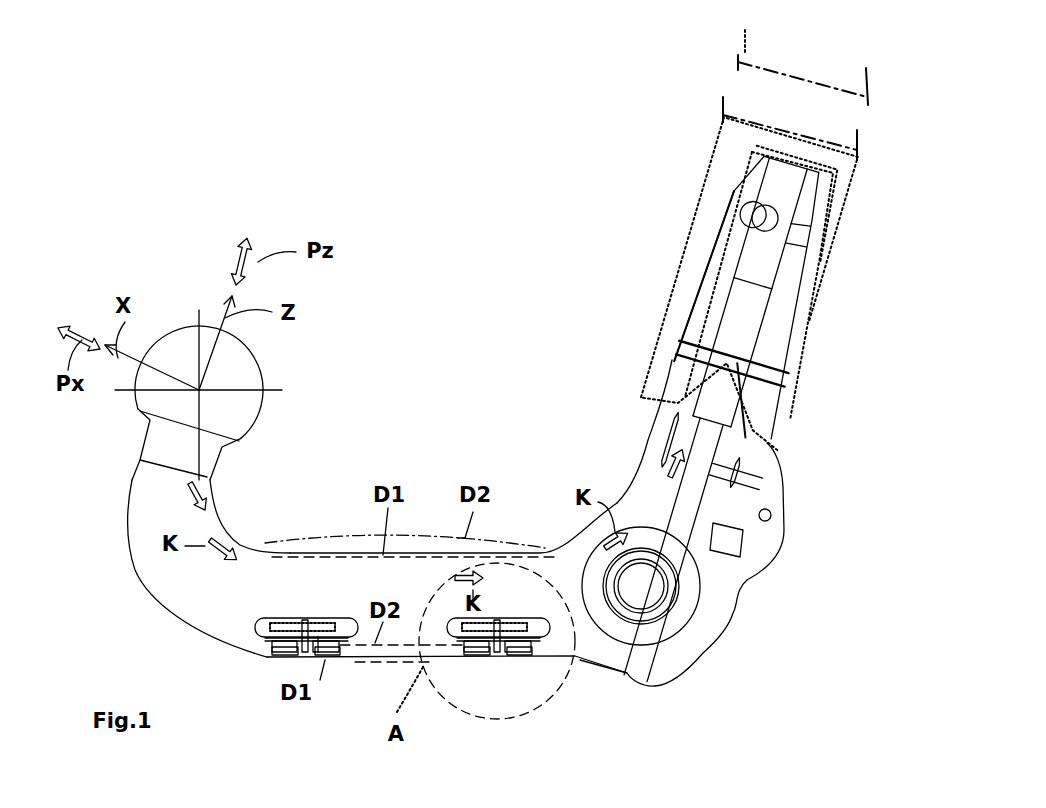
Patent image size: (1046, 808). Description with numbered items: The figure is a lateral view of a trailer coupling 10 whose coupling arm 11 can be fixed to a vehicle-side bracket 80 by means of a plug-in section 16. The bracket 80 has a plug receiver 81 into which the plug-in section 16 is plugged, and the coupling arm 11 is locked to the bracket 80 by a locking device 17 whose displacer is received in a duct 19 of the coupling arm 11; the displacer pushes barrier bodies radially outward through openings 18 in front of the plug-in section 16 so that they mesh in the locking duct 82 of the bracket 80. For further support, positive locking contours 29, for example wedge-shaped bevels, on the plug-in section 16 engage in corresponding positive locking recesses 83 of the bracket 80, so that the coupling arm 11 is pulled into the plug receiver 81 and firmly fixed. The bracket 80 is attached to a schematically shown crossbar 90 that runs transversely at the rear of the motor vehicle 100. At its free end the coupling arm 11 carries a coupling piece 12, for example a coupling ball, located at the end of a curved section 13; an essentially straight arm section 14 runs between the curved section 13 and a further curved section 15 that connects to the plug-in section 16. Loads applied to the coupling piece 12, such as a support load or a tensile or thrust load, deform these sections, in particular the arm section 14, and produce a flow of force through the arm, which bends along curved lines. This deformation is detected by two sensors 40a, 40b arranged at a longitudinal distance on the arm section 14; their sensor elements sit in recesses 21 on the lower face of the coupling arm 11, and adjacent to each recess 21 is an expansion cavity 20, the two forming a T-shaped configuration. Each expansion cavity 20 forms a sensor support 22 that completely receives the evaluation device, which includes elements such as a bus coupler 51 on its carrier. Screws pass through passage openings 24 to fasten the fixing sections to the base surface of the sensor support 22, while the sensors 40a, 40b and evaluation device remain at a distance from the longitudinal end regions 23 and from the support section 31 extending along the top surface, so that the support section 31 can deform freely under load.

The trailer coupling 10 is at (146, 178).
The coupling arm 11 is at (296, 551).
The coupling piece 12 is at (250, 360).
The curved section 13 is at (140, 528).
The arm section 14 is at (358, 660).
The further curved section 15 is at (705, 637).
The plug-in section 16 is at (790, 350).
The locking device 17 is at (697, 298).
The openings 18 is at (756, 218).
The duct 19 is at (703, 443).
The expansion cavity 20 is at (270, 625).
The recess 21 is at (502, 655).
The sensor support 22 is at (458, 625).
The longitudinal end region 23 is at (545, 623).
The passage opening 24 is at (470, 645).
The positive locking contour 29 is at (727, 403).
The support section 31 is at (306, 620).
The sensor 40a is at (250, 674).
The sensor 40b is at (475, 705).
The bus coupler 51 is at (293, 622).
The bracket 80 is at (686, 192).
The plug receiver 81 is at (690, 240).
The locking duct 82 is at (832, 262).
The positive locking recess 83 is at (777, 450).
The crossbar 90 is at (725, 98).
The motor vehicle 100 is at (742, 45).